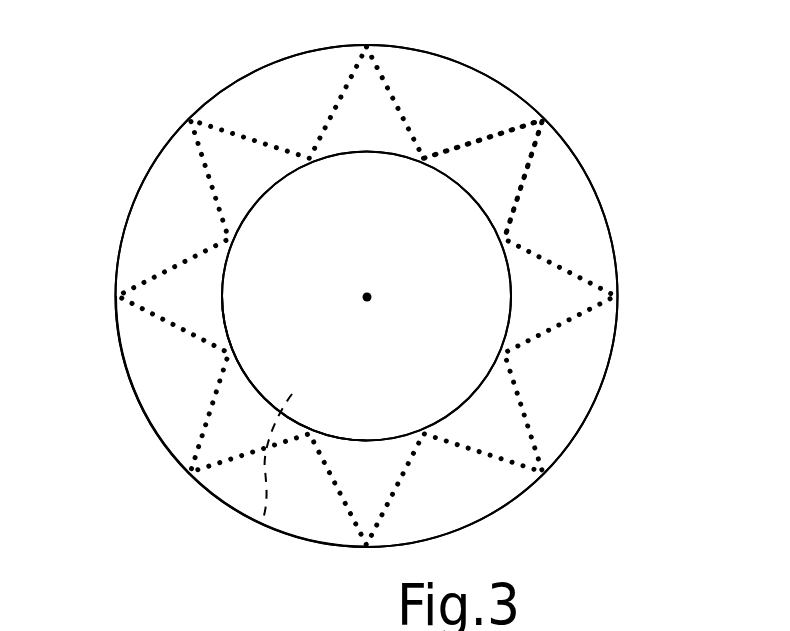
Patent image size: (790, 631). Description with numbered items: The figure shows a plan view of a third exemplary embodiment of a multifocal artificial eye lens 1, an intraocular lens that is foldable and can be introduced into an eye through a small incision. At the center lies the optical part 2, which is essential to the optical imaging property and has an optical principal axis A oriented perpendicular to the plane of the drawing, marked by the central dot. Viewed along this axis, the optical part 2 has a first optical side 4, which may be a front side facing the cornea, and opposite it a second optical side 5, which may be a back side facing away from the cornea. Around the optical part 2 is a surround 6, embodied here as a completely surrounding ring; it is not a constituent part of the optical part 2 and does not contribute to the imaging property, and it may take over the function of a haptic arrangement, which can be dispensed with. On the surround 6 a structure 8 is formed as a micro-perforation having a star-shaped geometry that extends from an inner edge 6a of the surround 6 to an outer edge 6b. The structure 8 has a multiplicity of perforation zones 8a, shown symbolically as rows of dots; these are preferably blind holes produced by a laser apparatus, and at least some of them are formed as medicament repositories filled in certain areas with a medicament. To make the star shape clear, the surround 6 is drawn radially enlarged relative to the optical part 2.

The artificial eye lens 1 is at (620, 136).
The optical part 2 is at (466, 416).
The first optical side 4 is at (453, 368).
The second optical side 5 is at (262, 522).
The surround 6 is at (588, 230).
The inner edge of the surround 6a is at (253, 387).
The outer edge of the surround 6b is at (131, 385).
The structure 8 is at (452, 126).
The perforation zones 8a is at (481, 143).
The optical principal axis A is at (367, 297).